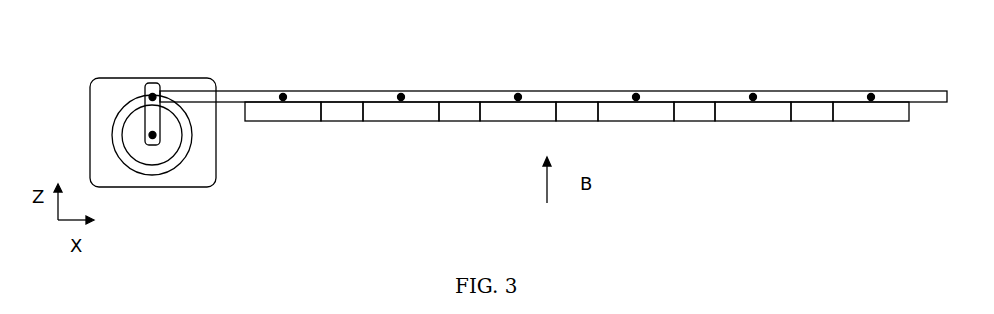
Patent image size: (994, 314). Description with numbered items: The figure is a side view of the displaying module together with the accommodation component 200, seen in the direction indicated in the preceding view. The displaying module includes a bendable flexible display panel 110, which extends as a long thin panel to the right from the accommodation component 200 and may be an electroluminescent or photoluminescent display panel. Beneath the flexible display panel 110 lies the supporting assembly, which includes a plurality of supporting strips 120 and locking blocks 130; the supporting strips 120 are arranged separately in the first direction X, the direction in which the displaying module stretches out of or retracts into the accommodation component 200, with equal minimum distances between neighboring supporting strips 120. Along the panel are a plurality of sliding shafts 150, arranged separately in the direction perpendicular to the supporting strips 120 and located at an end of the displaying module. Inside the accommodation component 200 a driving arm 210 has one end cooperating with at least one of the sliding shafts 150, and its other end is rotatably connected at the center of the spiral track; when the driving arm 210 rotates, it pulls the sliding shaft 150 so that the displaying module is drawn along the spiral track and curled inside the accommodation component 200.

The flexible display panel 110 is at (452, 95).
The supporting strips 120 is at (402, 105).
The locking blocks 130 is at (343, 108).
The sliding shafts 150 is at (283, 92).
The accommodation component 200 is at (113, 100).
The driving arm 210 is at (152, 83).